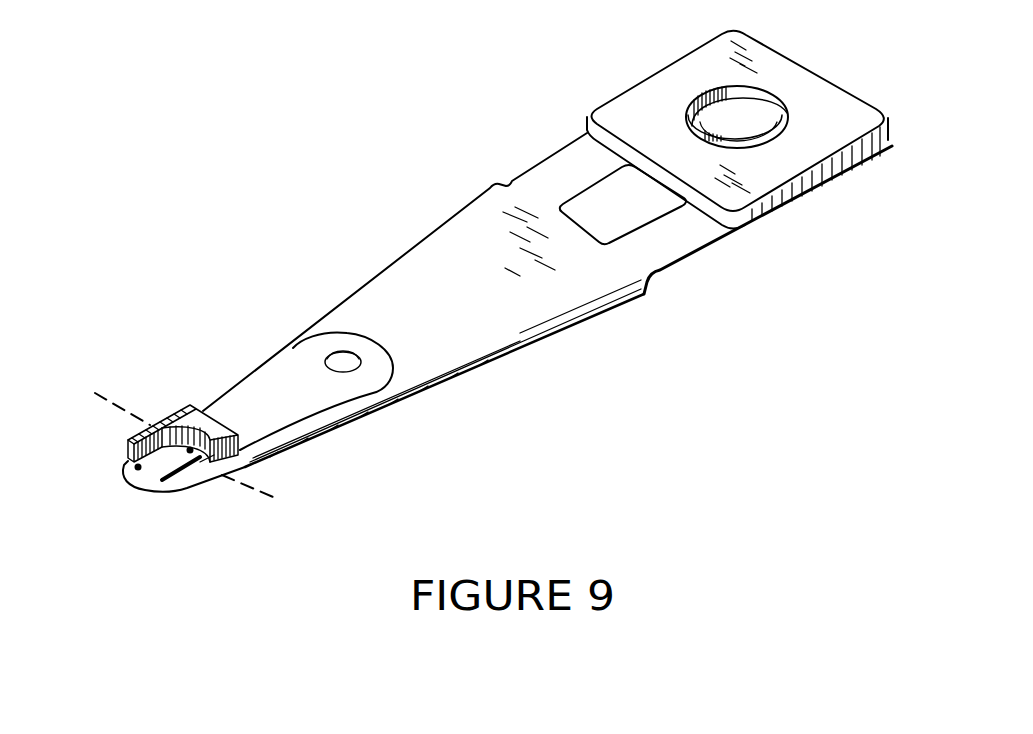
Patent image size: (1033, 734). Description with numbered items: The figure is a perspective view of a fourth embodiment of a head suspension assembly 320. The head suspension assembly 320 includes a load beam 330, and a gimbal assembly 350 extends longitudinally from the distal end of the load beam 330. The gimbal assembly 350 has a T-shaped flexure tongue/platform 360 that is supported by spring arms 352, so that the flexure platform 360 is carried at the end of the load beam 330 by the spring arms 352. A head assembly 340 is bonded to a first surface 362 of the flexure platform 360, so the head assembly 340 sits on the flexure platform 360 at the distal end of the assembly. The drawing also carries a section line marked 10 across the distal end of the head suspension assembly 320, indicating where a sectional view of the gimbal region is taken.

The head suspension assembly 320 is at (370, 203).
The load beam 330 is at (502, 322).
The head assembly 340 is at (165, 417).
The gimbal assembly 350 is at (210, 485).
The spring arms 352 is at (190, 484).
The flexure tongue/platform 360 is at (172, 468).
The first surface 362 is at (124, 472).
The section line 10- 10 is at (320, 472).